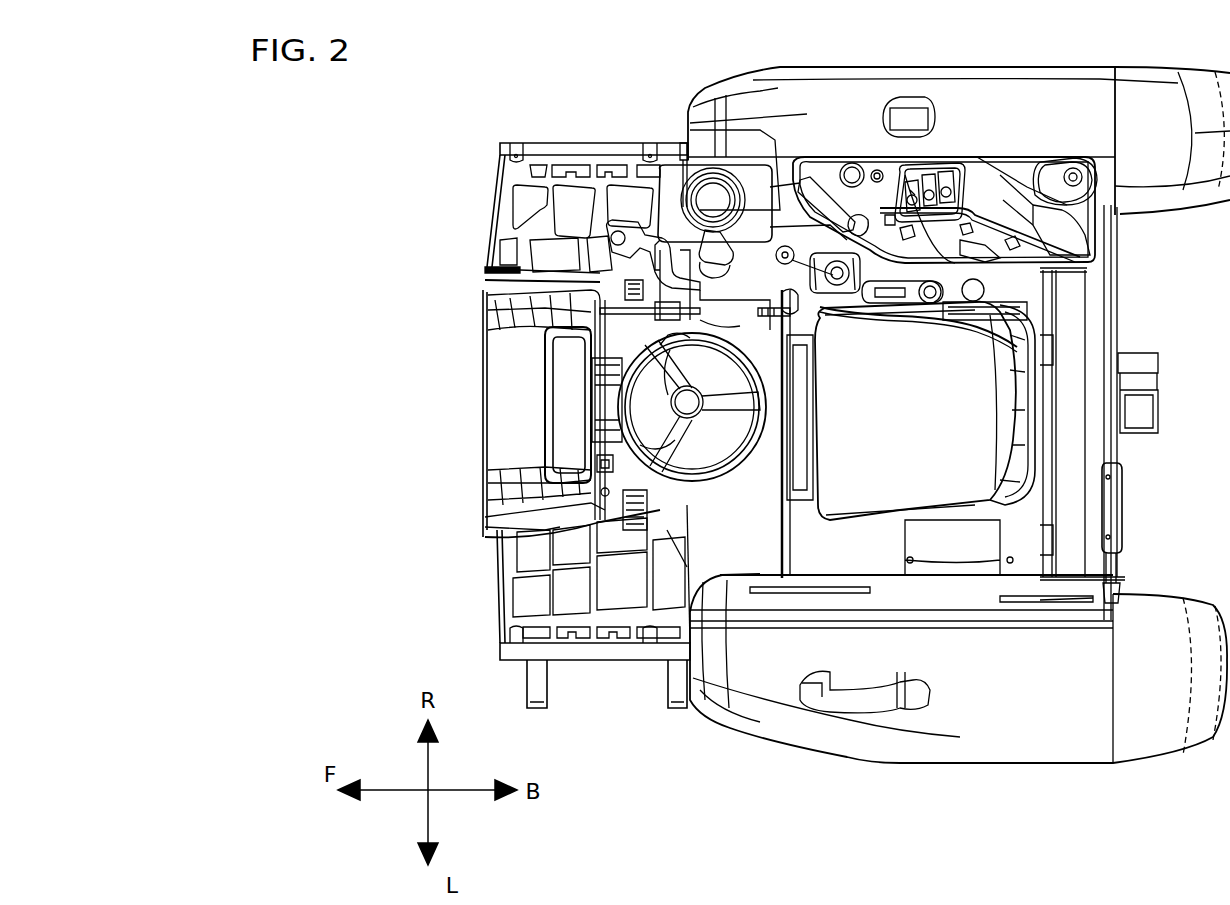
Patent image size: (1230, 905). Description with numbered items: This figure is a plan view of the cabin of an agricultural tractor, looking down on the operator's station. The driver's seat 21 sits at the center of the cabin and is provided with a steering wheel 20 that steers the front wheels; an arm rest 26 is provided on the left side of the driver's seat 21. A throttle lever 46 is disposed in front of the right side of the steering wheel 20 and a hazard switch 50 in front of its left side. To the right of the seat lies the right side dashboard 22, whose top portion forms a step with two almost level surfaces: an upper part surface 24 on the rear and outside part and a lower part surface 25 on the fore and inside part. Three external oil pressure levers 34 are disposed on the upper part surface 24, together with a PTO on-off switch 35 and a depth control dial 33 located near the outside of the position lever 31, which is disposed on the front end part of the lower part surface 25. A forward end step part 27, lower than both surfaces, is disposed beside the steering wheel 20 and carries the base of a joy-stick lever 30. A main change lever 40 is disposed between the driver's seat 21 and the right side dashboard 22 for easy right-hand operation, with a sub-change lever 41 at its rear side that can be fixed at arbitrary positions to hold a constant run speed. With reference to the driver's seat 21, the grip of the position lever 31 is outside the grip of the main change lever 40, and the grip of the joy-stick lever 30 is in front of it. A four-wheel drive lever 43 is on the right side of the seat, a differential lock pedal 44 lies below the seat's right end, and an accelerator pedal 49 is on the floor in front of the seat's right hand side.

The steering wheel 20 is at (620, 388).
The driver's seat 21 is at (1010, 420).
The right side dashboard 22 is at (785, 178).
The upper part surface 24 is at (1063, 227).
The lower part surface 25 is at (987, 250).
The arm rest 26 is at (1020, 550).
The forward end step part 27 is at (773, 212).
The joy-stick lever 30 is at (680, 163).
The position lever 31 is at (808, 180).
The depth control dial 33 is at (858, 163).
The external oil pressure levers 34 is at (940, 175).
The PTO on-off switch 35 is at (872, 170).
The main change lever 40 is at (835, 312).
The sub-change lever 41 is at (890, 305).
The 4-wheel drive lever 43 is at (800, 305).
The differential lock pedal 44 is at (770, 308).
The throttle lever 46 is at (550, 208).
The accelerator pedal 49 is at (643, 240).
The hazard switch 50 is at (593, 463).